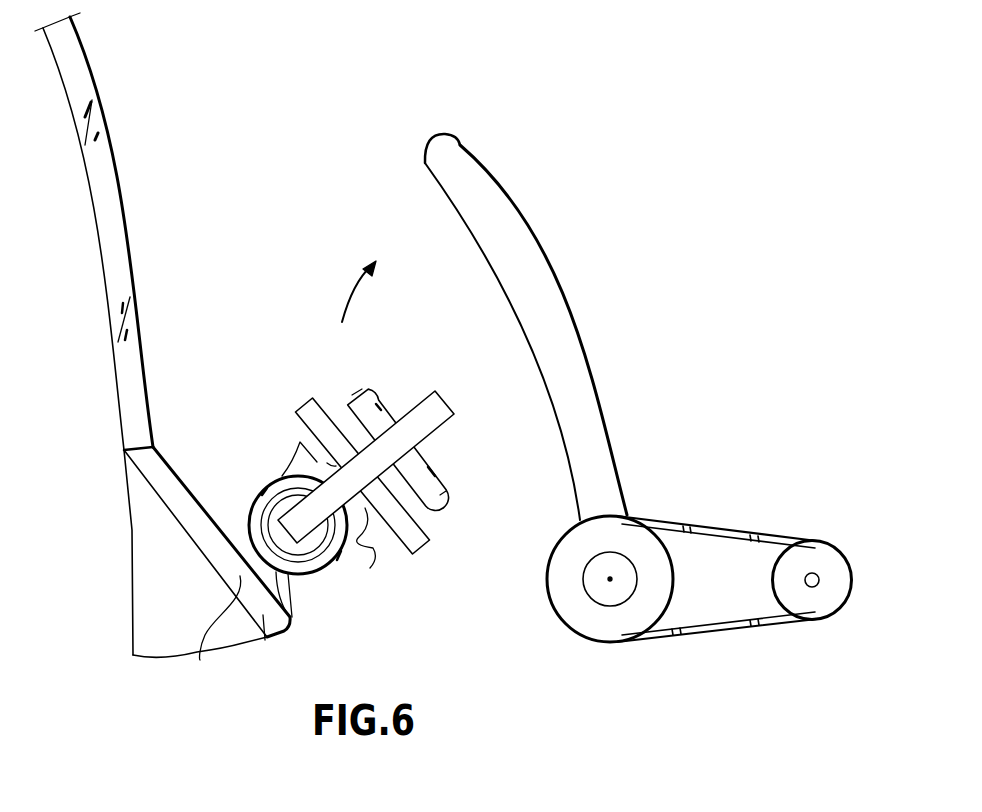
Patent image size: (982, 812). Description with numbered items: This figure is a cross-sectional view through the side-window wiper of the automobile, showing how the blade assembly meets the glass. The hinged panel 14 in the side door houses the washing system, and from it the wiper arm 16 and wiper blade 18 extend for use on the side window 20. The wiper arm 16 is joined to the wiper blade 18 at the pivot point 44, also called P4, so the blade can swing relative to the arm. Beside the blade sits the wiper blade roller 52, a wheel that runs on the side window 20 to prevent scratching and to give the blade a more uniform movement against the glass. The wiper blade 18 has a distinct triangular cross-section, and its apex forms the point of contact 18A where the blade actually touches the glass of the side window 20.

The hinged panel 14 is at (200, 492).
The wiper arm 16 is at (430, 515).
The wiper blade 18 is at (360, 537).
The point of contact 18A is at (200, 660).
The side window 20 is at (265, 640).
The wiper blade roller 52 is at (281, 485).
The pivot point 44 is at (452, 414).